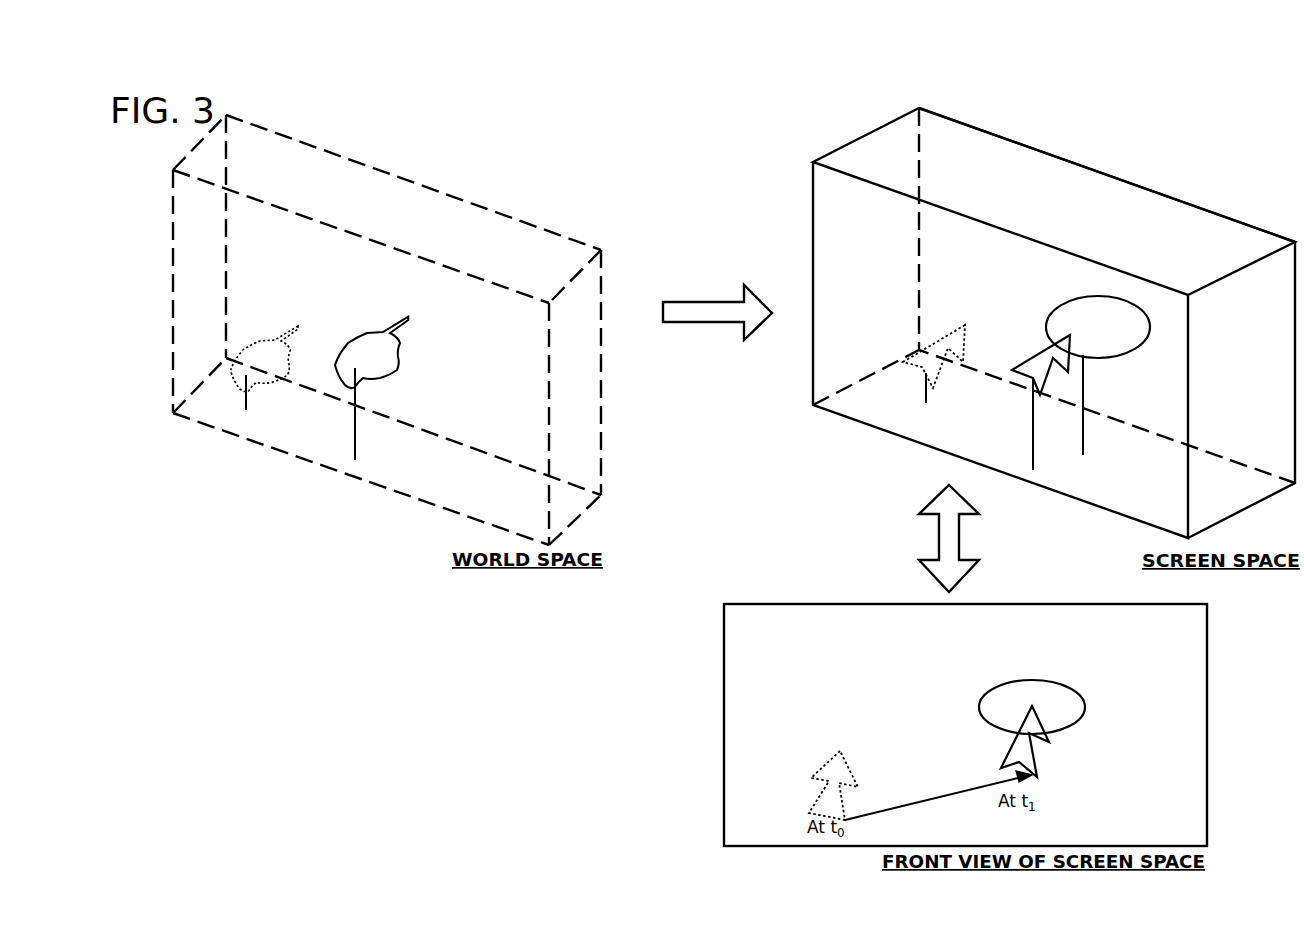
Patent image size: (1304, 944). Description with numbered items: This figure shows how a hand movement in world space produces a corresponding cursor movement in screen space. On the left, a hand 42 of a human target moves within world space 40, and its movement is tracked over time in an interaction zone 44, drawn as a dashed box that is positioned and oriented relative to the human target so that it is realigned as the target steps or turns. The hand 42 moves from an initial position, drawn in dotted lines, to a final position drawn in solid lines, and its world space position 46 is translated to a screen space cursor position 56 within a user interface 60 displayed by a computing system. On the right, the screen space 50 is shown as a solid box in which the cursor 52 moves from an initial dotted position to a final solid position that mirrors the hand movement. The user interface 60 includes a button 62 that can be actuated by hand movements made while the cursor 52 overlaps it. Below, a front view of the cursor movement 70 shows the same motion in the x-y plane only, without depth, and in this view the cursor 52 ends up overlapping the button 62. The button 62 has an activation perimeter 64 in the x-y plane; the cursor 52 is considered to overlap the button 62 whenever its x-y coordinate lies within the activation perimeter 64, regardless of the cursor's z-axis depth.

The world space 40 is at (430, 150).
The hand 42 is at (378, 316).
The interaction zone 44 is at (483, 205).
The world space position 46 is at (357, 465).
The screen space 50 is at (1173, 148).
The cursor 52 is at (1018, 338).
The screen space cursor position 56 is at (1033, 475).
The user interface 60 is at (1025, 170).
The button 62 is at (1112, 318).
The activation perimeter 64 is at (1002, 685).
The front view of the cursor movement 70 is at (1208, 640).